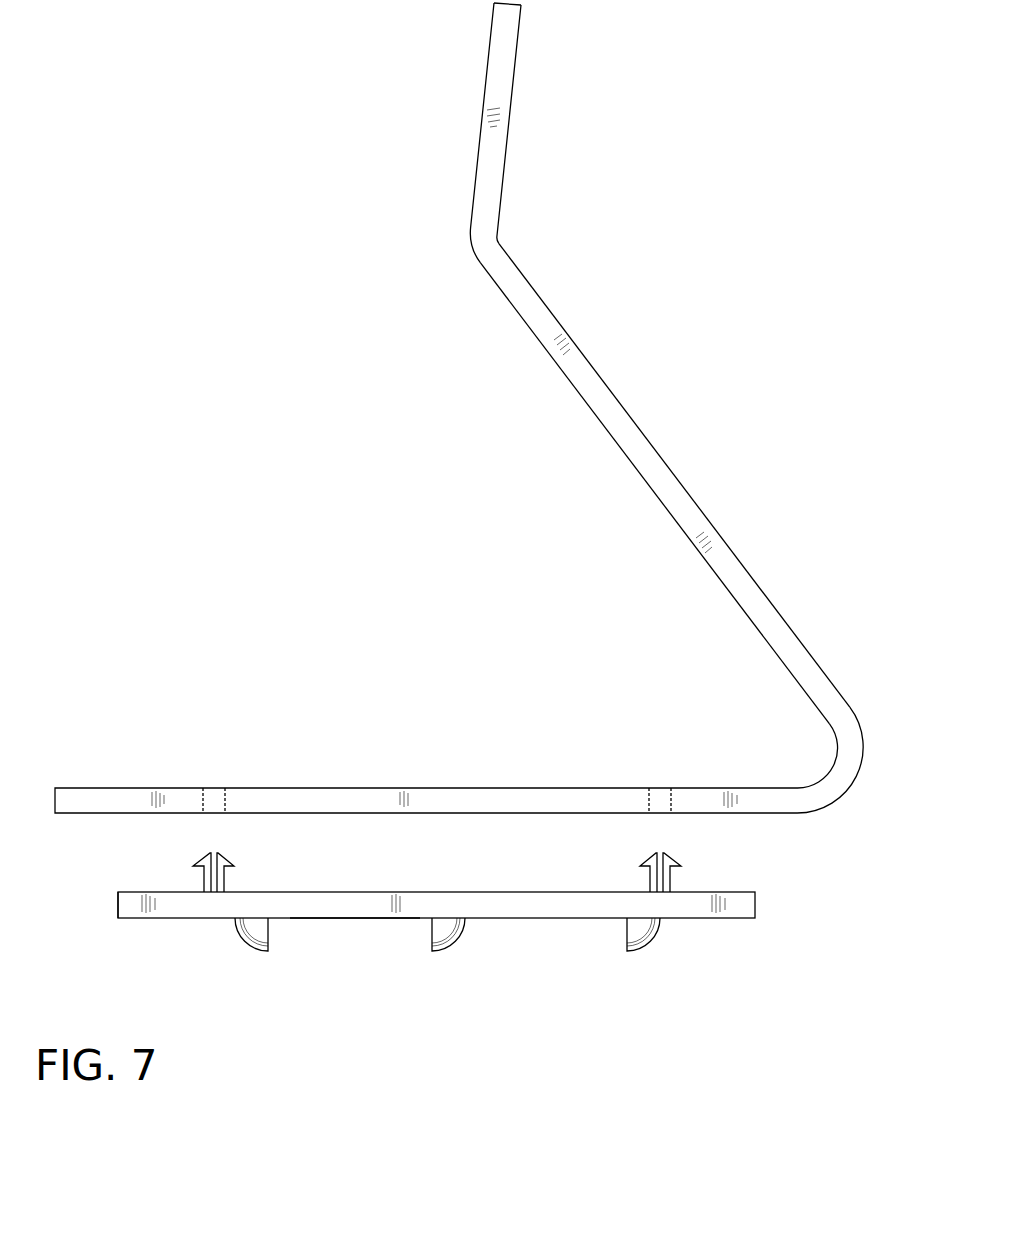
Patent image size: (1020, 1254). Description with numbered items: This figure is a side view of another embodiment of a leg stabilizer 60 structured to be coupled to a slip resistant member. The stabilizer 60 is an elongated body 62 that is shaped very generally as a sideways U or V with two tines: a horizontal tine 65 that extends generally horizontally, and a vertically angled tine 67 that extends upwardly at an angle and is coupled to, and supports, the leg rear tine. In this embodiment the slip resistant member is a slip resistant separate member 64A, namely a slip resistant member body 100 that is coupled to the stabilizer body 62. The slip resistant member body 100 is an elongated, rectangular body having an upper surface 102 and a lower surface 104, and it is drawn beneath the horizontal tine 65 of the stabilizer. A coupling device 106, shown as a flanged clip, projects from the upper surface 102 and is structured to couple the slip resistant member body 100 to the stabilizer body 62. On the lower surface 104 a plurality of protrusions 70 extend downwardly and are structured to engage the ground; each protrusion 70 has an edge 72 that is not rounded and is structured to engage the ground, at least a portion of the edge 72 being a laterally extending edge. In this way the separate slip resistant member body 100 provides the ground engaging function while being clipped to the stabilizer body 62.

The leg stabilizer 60 is at (366, 319).
The vertically angled tine 67 is at (617, 395).
The elongated body 62 is at (690, 498).
The horizontal tine 65 is at (120, 788).
The slip resistant member body 100 is at (757, 903).
The slip resistant separate member 64A is at (118, 905).
The coupling device 106 is at (203, 880).
The upper surface 102 is at (555, 892).
The edge 72 is at (240, 935).
The lower surface 104 is at (375, 918).
The protrusion 70 is at (462, 935).